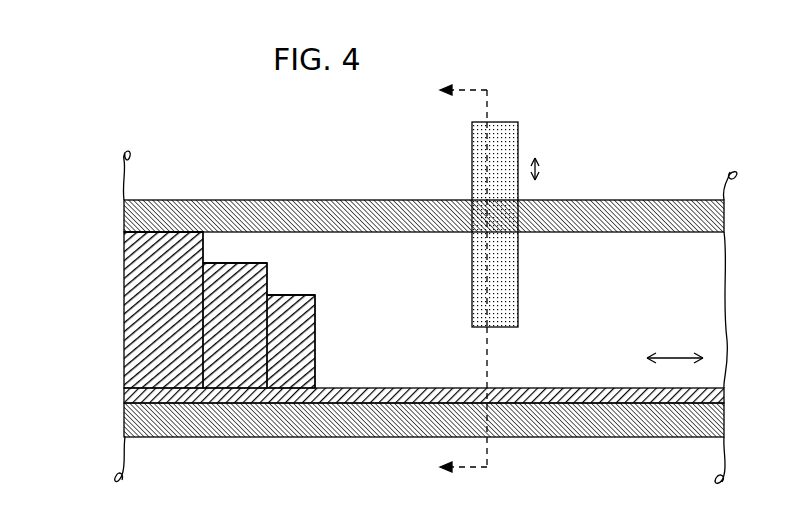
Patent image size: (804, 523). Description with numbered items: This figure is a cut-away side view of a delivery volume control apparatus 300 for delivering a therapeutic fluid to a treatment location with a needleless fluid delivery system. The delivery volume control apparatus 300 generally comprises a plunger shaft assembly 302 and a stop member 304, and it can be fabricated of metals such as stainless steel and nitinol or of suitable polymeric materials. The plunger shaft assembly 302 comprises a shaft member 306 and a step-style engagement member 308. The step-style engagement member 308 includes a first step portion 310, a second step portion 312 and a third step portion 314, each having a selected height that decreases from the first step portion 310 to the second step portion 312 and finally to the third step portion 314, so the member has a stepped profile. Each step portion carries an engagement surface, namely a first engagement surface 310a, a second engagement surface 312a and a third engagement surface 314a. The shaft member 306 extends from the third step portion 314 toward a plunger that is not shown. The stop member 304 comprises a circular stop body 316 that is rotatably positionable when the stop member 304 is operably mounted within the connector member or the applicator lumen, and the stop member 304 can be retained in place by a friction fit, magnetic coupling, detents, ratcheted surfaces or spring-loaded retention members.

The delivery volume control apparatus 300 is at (620, 75).
The plunger shaft assembly 302 is at (336, 386).
The stop member 304 is at (507, 123).
The shaft member 306 is at (572, 392).
The step-style engagement member 308 is at (233, 262).
The first step portion 310 is at (147, 290).
The first engagement surface 310a is at (203, 246).
The second step portion 312 is at (238, 358).
The second engagement surface 312a is at (268, 277).
The third step portion 314 is at (293, 358).
The third engagement surface 314a is at (316, 305).
The circular stop body 316 is at (517, 192).